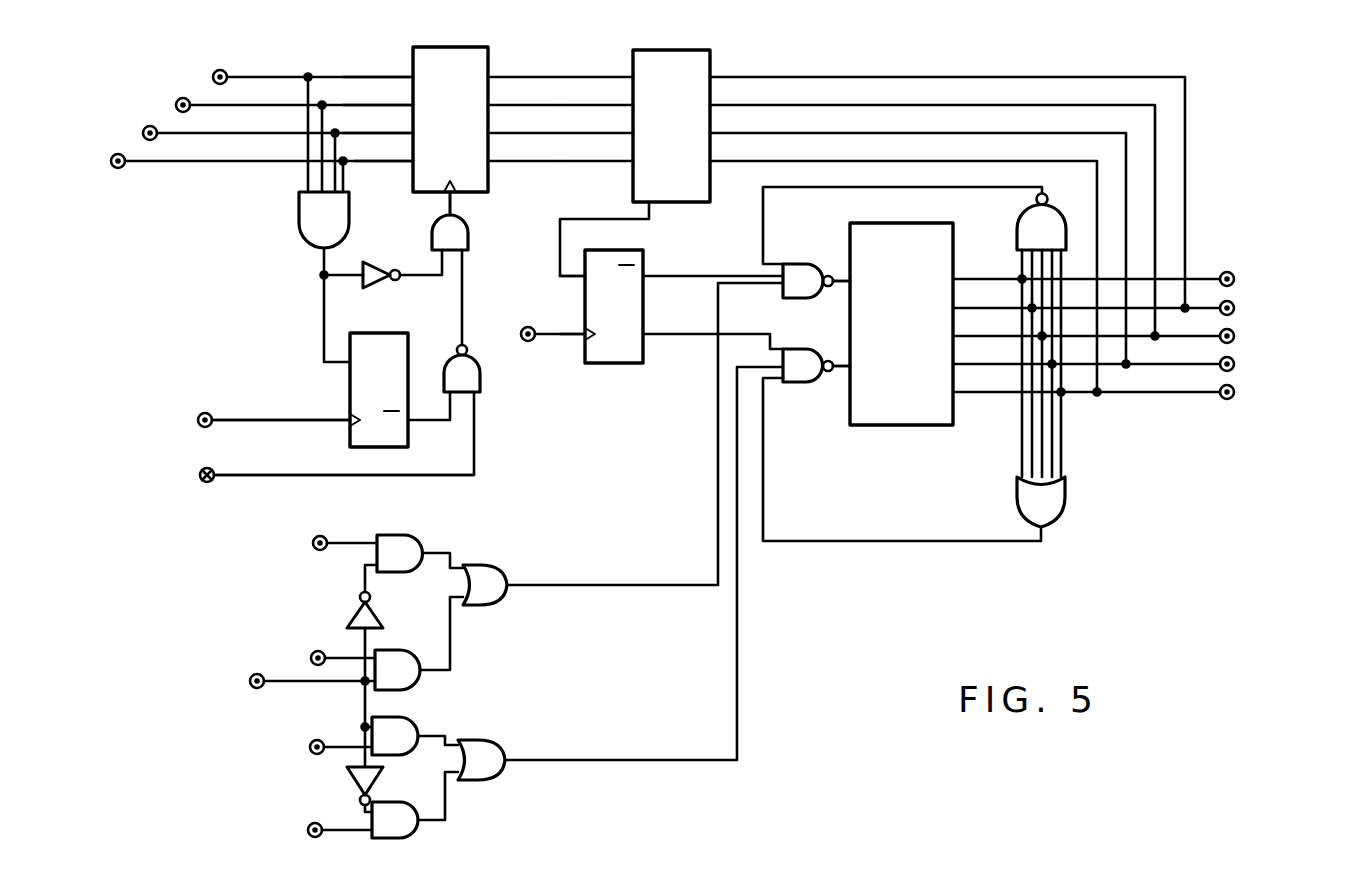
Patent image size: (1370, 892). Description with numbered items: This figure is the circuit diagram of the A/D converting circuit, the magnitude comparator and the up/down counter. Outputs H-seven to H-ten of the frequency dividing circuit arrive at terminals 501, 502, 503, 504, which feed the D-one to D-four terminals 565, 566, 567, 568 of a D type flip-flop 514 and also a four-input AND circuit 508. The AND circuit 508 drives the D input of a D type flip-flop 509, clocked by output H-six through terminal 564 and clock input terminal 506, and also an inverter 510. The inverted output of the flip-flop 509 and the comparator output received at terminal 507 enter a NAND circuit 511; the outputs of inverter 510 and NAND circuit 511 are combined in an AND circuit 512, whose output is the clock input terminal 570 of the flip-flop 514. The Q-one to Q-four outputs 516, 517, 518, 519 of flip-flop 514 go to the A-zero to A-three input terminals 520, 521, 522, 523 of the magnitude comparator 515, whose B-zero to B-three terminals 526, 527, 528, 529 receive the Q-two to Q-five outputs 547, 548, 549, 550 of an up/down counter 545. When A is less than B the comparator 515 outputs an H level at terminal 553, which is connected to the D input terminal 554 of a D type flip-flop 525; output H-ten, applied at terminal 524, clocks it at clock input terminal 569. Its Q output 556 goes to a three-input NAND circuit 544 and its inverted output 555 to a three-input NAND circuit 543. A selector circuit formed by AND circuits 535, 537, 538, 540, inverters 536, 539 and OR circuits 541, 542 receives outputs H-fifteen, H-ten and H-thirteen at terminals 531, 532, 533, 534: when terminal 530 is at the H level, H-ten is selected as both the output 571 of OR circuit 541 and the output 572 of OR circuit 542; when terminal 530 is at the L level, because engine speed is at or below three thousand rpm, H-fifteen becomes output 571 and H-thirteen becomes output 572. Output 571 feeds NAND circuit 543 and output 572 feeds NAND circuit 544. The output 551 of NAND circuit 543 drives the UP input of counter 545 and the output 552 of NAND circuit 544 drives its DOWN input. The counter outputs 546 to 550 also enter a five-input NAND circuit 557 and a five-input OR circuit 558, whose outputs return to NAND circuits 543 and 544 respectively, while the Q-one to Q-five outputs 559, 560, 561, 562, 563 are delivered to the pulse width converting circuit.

The terminal 501 is at (221, 70).
The terminal 502 is at (177, 99).
The terminal 503 is at (143, 129).
The terminal 504 is at (122, 169).
The clock input terminal 506 is at (265, 426).
The terminal 507 is at (207, 483).
The 4-input AND circuit 508 is at (299, 213).
The D type flip-flop 509 is at (350, 390).
The inverter 510 is at (388, 267).
The NAND circuit 511 is at (479, 377).
The AND circuit 512 is at (470, 240).
The D type flip-flop 514 is at (489, 50).
The magnitude comparator 515 is at (712, 53).
The Q1 output 516 is at (508, 78).
The Q2 output 517 is at (508, 106).
The Q3 output 518 is at (508, 134).
The Q4 output 519 is at (508, 162).
The A0 input terminal 520 is at (631, 78).
The A1 input terminal 521 is at (631, 106).
The A2 input terminal 522 is at (631, 134).
The A3 input terminal 523 is at (631, 162).
The H10 clock input terminal 524 is at (534, 342).
The D type flip-flop 525 is at (645, 261).
The B0 terminal 526 is at (771, 78).
The B1 terminal 527 is at (771, 106).
The B2 terminal 528 is at (771, 134).
The B3 terminal 529 is at (771, 162).
The terminal 530 is at (254, 675).
The H15 input terminal 531 is at (320, 536).
The H10 input terminal 532 is at (318, 651).
The H10 input terminal 533 is at (318, 740).
The H13 input terminal 534 is at (317, 823).
The AND circuit 535 is at (395, 535).
The inverter 536 is at (378, 614).
The AND circuit 537 is at (378, 658).
The AND circuit 538 is at (415, 723).
The inverter 539 is at (379, 783).
The AND circuit 540 is at (425, 826).
The OR circuit 541 is at (499, 569).
The OR circuit 542 is at (499, 754).
The 3-input NAND circuit 543 is at (790, 262).
The 3-input NAND circuit 544 is at (795, 384).
The up/down counter 545 is at (936, 426).
The Q1 output 546 is at (1086, 266).
The Q2 output terminal 547 is at (1086, 295).
The Q3 output terminal 548 is at (1086, 323).
The Q4 output terminal 549 is at (1086, 351).
The Q5 output terminal 550 is at (1086, 379).
The output 551 is at (832, 278).
The output 552 is at (834, 362).
The terminal 553 is at (649, 212).
The D input terminal 554 is at (562, 277).
The Q-bar output 555 is at (698, 281).
The Q output 556 is at (700, 338).
The 5-input NAND circuit 557 is at (1017, 238).
The 5-input OR circuit 558 is at (1068, 496).
The Q1 output 559 is at (1279, 274).
The Q2 output 560 is at (1280, 312).
The Q3 output 561 is at (1280, 338).
The Q4 output 562 is at (1280, 367).
The Q5 output 563 is at (1282, 396).
The H6 input terminal 564 is at (202, 413).
The D1 terminal 565 is at (378, 65).
The D2 terminal 566 is at (378, 93).
The D3 terminal 567 is at (378, 121).
The D4 terminal 568 is at (384, 149).
The clock input terminal 569 is at (570, 332).
The clock input terminal 570 is at (458, 200).
The output 571 is at (620, 585).
The output 572 is at (608, 760).